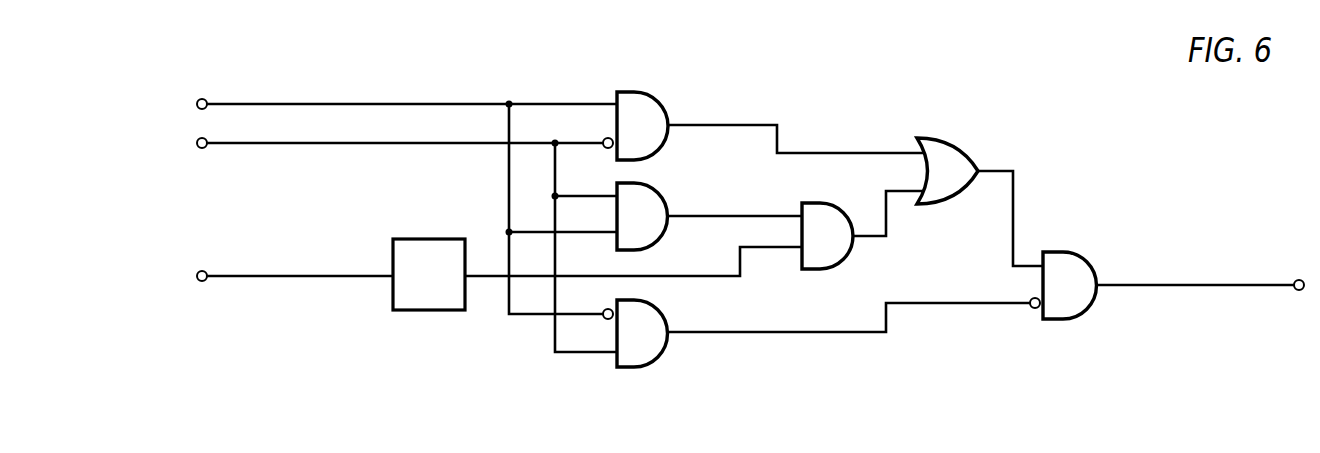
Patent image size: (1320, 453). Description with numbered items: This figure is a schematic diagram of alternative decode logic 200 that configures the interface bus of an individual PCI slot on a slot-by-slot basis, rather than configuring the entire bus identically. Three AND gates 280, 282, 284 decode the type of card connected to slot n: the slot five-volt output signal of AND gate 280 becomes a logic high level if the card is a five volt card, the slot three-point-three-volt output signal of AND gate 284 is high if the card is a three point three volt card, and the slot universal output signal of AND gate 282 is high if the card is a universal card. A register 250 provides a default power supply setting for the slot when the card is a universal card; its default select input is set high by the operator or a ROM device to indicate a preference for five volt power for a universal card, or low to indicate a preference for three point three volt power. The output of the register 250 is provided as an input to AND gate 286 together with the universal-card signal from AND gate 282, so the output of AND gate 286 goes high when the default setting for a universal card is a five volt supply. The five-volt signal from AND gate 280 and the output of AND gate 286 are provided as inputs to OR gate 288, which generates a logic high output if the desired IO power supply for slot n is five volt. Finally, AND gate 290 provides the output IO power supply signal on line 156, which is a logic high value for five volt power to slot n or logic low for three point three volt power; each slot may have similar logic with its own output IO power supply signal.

The power supply selection logic circuit 200 is at (833, 88).
The register 250 is at (432, 237).
The AND gate 280 is at (659, 137).
The AND gate 282 is at (659, 228).
The AND gate 284 is at (659, 344).
The AND gate 286 is at (845, 248).
The OR gate 288 is at (966, 184).
The AND gate 290 is at (1087, 297).
The line 156 is at (1172, 286).